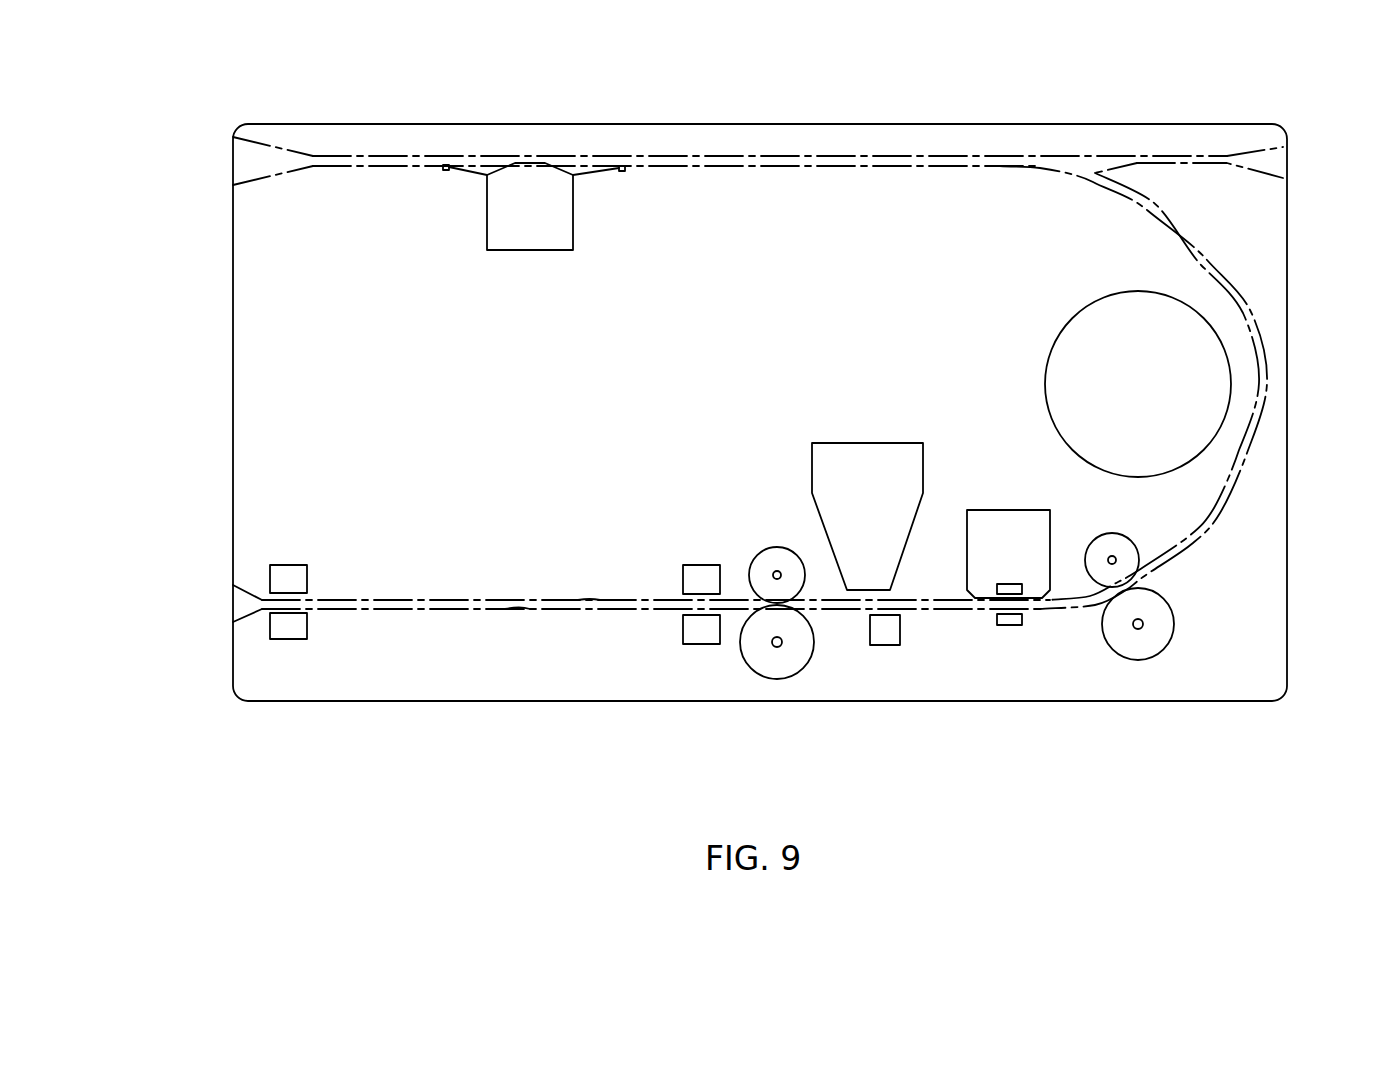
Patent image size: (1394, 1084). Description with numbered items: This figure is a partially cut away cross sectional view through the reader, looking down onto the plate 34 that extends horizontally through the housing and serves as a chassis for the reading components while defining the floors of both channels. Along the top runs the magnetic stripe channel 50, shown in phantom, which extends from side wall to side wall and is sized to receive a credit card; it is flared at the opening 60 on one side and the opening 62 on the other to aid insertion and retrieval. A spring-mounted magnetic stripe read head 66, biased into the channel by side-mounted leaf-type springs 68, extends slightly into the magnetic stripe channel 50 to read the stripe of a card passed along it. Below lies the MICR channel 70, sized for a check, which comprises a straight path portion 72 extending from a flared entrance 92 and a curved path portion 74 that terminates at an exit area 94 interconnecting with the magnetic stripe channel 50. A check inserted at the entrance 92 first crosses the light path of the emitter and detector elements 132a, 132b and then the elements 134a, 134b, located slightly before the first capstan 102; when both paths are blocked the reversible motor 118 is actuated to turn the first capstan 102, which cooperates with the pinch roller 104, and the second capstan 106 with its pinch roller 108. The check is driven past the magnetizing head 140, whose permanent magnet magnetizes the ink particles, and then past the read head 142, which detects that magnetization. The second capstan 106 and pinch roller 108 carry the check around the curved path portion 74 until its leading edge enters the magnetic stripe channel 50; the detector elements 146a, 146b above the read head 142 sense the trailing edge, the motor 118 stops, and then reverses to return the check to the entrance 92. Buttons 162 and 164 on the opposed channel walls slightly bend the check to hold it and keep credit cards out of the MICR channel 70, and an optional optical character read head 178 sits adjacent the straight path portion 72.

The plate 34 is at (1252, 645).
The magnetic stripe channel 50 is at (732, 158).
The opening 60 is at (250, 165).
The opening 62 is at (1265, 150).
The magnetic stripe read head 66 is at (508, 218).
The leaf-type springs 68 is at (455, 170).
The MICR channel 70 is at (365, 603).
The straight path portion 72 is at (418, 605).
The curved path portion 74 is at (1222, 514).
The entrance 92 is at (255, 603).
The exit area 94 is at (1083, 170).
The first capstan 102 is at (777, 558).
The pinch roller 104 is at (775, 668).
The second capstan 106 is at (1103, 552).
The pinch roller 108 is at (1133, 648).
The reversible motor 118 is at (1075, 360).
The emitter element 132a is at (270, 630).
The detector element 132b is at (283, 583).
The emitter element 134a is at (705, 636).
The detector element 134b is at (703, 578).
The magnetizing head 140 is at (882, 640).
The read head 142 is at (1033, 522).
The detector element 146a is at (1008, 625).
The detector element 146b is at (1003, 582).
The button 162 is at (578, 600).
The button 164 is at (520, 612).
The optical character read head 178 is at (843, 455).